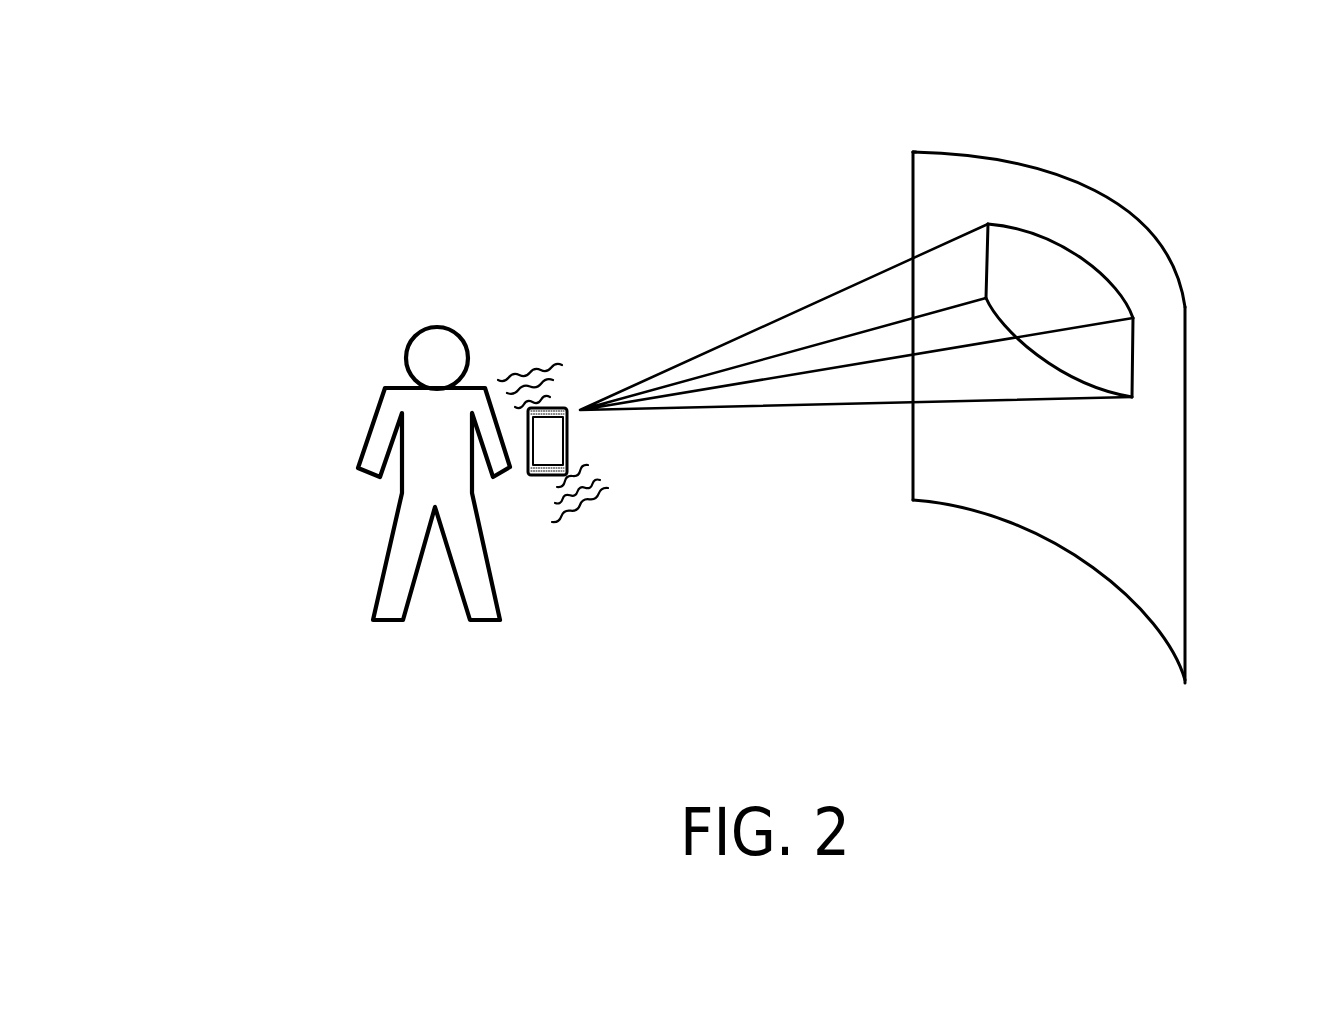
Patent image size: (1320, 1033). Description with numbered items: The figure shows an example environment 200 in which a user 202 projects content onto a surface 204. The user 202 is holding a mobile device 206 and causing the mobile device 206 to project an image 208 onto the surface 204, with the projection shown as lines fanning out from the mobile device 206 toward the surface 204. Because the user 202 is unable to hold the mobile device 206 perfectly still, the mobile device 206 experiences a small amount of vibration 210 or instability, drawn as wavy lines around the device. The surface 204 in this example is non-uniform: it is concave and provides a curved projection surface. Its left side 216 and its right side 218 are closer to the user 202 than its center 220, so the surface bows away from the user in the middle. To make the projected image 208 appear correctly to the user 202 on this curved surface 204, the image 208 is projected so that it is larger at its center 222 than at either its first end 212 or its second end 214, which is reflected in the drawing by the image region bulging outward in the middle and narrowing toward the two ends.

The environment 200 is at (258, 80).
The user 202 is at (432, 330).
The surface 204 is at (910, 226).
The mobile device 206 is at (566, 408).
The image 208 is at (1033, 343).
The vibration 210 is at (545, 348).
The first end 212 is at (1149, 302).
The second end 214 is at (989, 215).
The left side of the surface 216 is at (908, 145).
The right side of the surface 218 is at (1197, 311).
The center of the surface 220 is at (1083, 158).
The center of the image 222 is at (1083, 231).